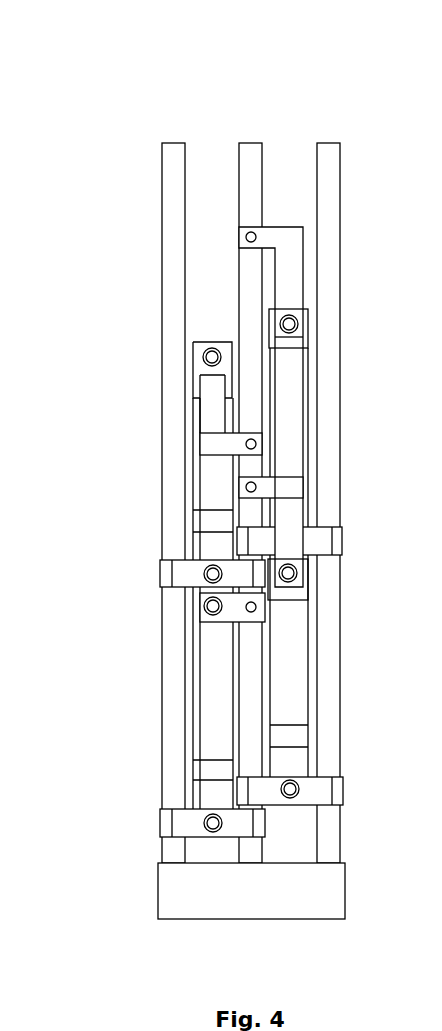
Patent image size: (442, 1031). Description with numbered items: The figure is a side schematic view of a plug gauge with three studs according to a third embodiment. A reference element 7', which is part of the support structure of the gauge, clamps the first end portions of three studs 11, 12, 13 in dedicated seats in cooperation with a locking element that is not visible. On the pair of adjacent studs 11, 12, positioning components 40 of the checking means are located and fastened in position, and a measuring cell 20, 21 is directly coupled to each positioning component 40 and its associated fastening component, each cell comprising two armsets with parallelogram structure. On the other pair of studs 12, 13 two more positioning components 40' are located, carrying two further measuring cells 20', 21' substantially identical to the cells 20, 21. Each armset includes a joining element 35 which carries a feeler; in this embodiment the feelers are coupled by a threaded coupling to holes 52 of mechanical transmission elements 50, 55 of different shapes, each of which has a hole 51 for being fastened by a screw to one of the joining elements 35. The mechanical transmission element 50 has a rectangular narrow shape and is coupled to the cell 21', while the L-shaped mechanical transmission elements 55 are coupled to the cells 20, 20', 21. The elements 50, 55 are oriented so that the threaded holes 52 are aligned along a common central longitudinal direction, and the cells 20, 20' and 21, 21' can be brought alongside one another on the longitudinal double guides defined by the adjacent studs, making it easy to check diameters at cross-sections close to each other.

The reference element 7' is at (277, 889).
The stud 11 is at (322, 156).
The stud 12 is at (252, 156).
The stud 13 is at (171, 157).
The measuring cell 20 is at (322, 407).
The measuring cell 20' is at (141, 453).
The measuring cell 21 is at (330, 697).
The measuring cell 21' is at (126, 750).
The joining element 35 is at (193, 360).
The positioning component 40 is at (321, 667).
The positioning component 40' is at (156, 698).
The mechanical transmission element 50 is at (241, 613).
The hole 51 is at (212, 348).
The threaded hole 52 is at (252, 232).
The mechanical transmission element 55 is at (292, 267).